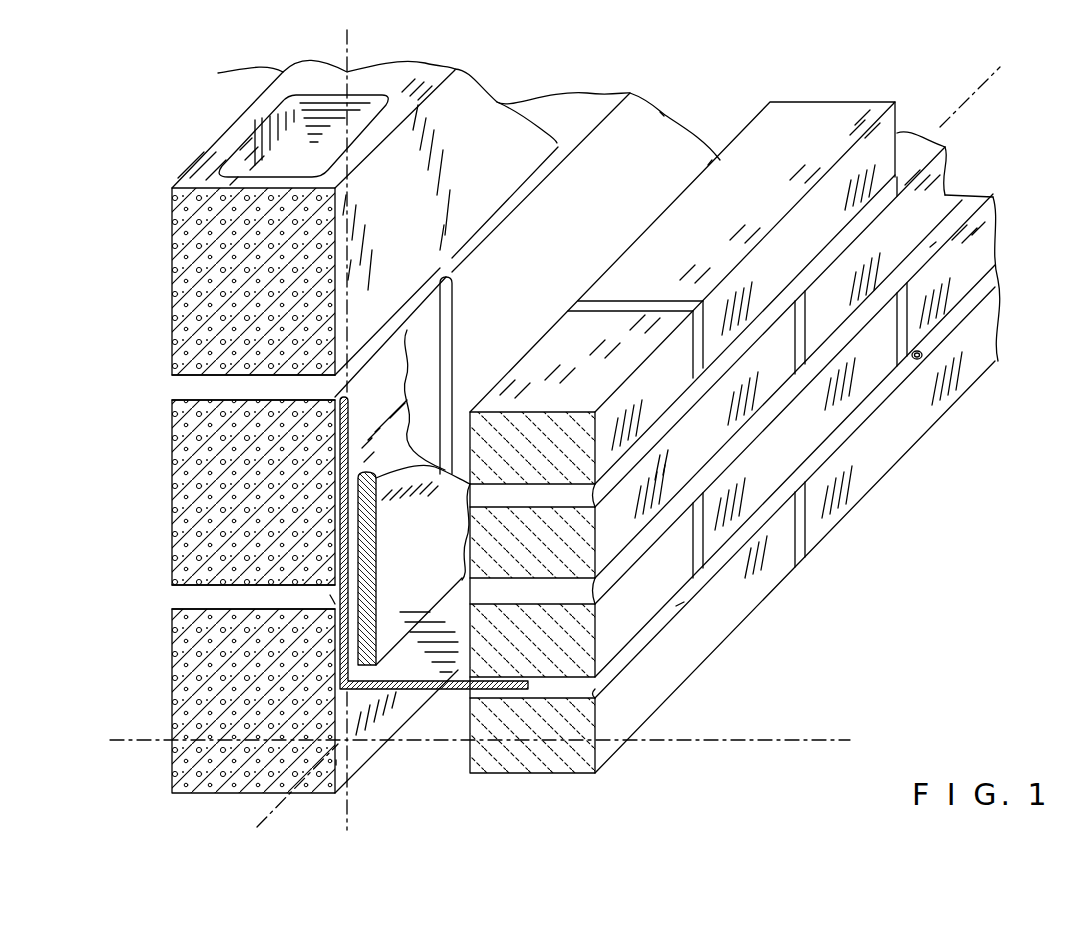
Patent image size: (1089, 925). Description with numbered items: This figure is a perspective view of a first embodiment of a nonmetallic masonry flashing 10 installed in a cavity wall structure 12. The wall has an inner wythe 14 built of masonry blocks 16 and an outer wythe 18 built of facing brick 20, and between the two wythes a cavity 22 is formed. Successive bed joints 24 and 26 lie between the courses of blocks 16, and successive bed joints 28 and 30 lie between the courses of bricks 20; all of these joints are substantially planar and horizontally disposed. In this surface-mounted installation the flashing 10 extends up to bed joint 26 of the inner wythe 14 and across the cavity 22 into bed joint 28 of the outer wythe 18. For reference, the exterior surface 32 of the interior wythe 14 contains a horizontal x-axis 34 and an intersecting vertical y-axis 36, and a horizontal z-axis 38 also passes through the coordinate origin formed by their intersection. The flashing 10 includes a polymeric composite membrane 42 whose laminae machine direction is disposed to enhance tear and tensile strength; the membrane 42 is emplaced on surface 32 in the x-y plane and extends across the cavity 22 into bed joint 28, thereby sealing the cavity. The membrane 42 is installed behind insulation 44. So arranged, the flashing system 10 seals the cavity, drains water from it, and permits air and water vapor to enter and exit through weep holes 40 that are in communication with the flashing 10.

The nonmetallic masonry flashing 10 is at (442, 694).
The cavity wall structure 12 is at (662, 116).
The inner wythe 14 is at (448, 98).
The masonry blocks 16 is at (236, 462).
The outer wythe 18 is at (893, 120).
The facing brick 20 is at (524, 457).
The cavity 22 is at (710, 168).
The bed joint 24 is at (177, 598).
The bed joint 26 is at (185, 386).
The bed joint 28 is at (680, 604).
The bed joint 30 is at (930, 247).
The exterior surface 32 is at (343, 762).
The x-axis 34 is at (262, 822).
The y-axis 36 is at (388, 827).
The z-axis 38 is at (125, 738).
The weep holes 40 is at (925, 360).
The polymeric composite membrane 42 is at (333, 596).
The insulation 44 is at (358, 520).